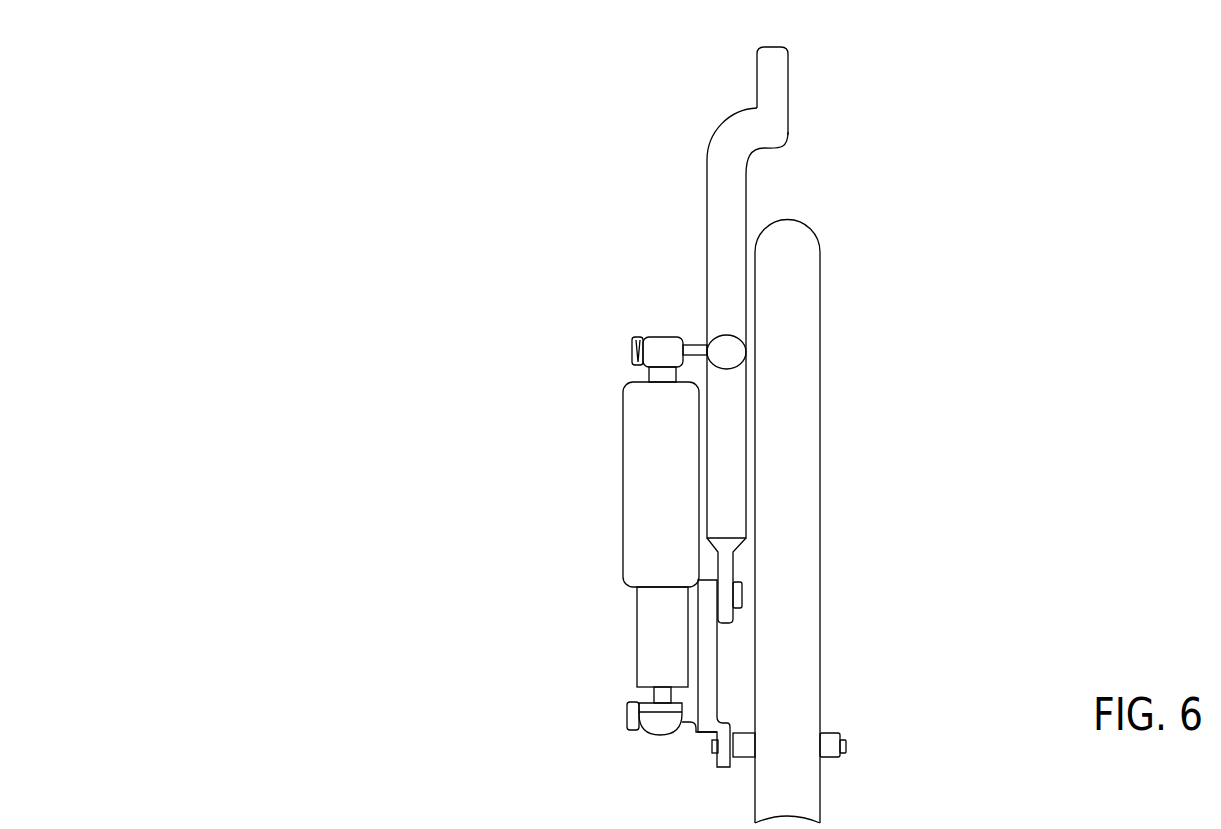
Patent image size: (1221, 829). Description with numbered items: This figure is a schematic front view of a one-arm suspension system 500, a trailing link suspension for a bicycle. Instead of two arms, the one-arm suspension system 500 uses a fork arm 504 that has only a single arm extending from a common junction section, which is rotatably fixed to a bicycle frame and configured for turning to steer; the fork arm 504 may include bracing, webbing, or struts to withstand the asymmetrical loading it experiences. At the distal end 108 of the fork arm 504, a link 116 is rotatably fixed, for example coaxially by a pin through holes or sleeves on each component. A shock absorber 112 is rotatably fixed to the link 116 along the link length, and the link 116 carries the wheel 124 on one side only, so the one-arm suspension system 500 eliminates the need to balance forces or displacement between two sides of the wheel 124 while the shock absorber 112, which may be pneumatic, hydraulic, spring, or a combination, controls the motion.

The one-arm suspension system 500 is at (207, 162).
The fork arm 504 is at (767, 135).
The shock absorber 112 is at (663, 463).
The distal end 108 is at (725, 590).
The link 116 is at (707, 682).
The wheel 124 is at (805, 660).